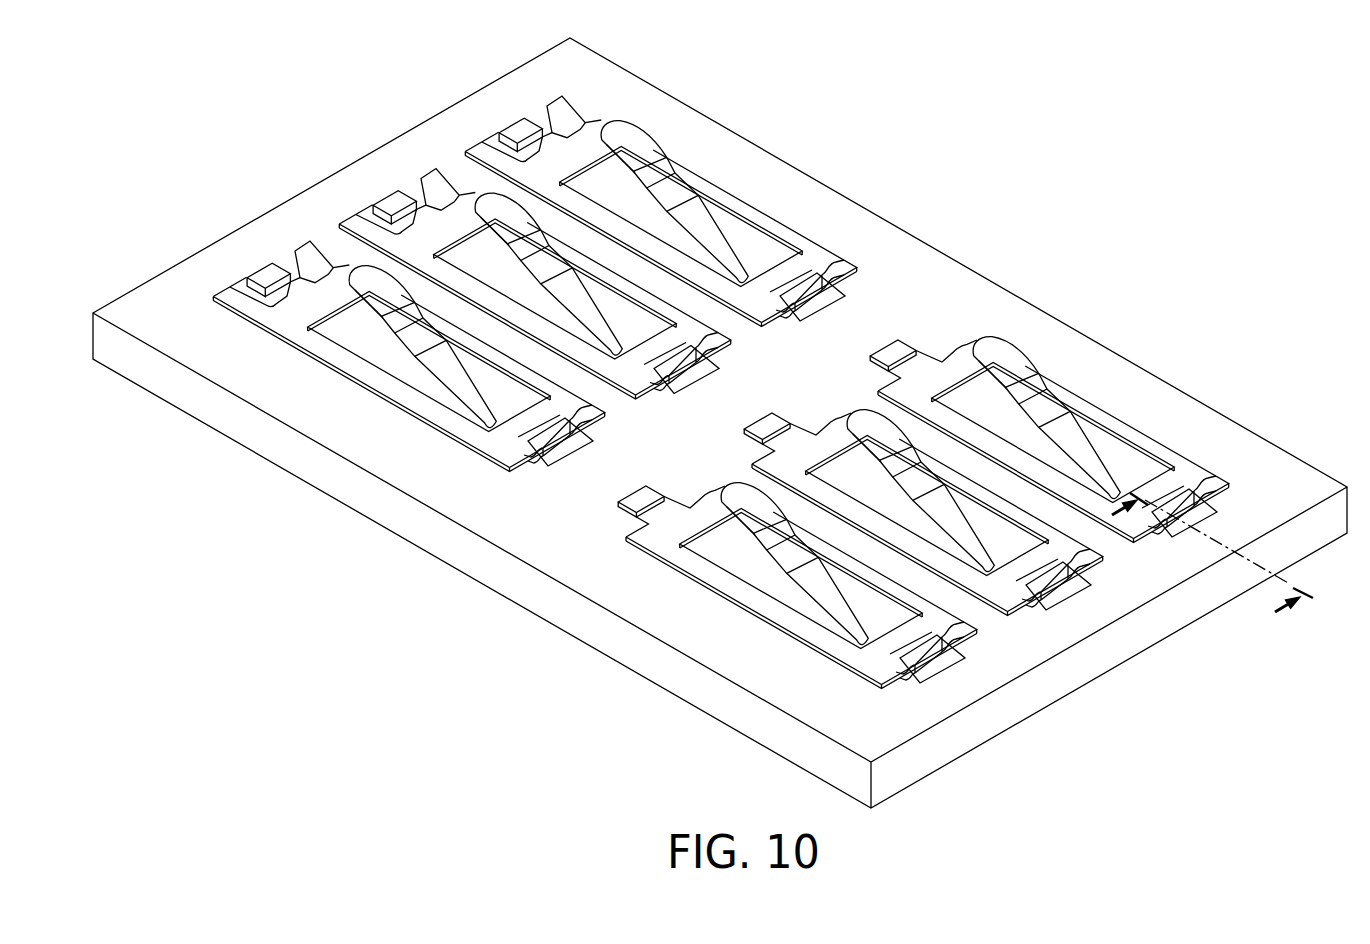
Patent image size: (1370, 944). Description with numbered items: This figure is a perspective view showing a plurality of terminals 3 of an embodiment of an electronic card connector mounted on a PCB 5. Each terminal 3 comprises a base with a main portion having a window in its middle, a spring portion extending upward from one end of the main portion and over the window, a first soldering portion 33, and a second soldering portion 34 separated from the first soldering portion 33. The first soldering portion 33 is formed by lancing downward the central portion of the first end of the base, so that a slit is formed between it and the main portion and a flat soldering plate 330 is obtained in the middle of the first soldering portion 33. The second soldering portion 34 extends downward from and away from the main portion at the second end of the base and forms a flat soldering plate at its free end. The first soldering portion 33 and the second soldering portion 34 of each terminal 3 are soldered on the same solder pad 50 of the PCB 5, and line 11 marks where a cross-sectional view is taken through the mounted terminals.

The terminal 3 is at (653, 141).
The PCB 5 is at (1181, 387).
The line 11- 11 is at (1197, 567).
The first soldering portion 33 is at (913, 655).
The second soldering portion 34 is at (265, 277).
The solder pad 50 is at (607, 503).
The flat soldering plate 330 is at (933, 658).